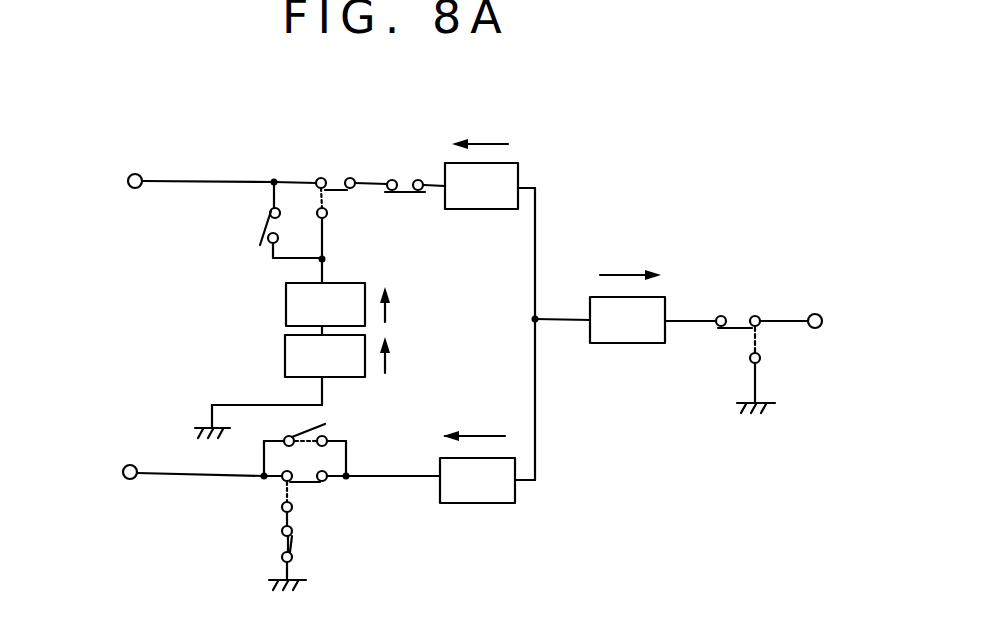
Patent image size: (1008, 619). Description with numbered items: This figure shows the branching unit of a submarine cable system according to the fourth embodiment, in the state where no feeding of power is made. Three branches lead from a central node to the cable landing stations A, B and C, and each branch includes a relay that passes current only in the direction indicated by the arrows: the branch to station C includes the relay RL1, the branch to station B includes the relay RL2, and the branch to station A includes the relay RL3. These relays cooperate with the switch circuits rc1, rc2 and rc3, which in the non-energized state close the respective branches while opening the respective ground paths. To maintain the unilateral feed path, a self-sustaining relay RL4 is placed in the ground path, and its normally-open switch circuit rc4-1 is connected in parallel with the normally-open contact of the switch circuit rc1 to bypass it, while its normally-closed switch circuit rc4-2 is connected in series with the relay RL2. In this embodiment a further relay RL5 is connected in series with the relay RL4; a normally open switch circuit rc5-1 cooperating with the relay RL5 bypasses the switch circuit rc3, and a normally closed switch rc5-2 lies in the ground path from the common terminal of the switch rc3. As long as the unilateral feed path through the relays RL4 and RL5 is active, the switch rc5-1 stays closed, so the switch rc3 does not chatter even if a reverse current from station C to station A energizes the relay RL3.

The cable landing station A is at (830, 322).
The cable landing station B is at (119, 182).
The cable landing station C is at (116, 473).
The relay RL1 is at (477, 480).
The relay RL2 is at (481, 186).
The relay RL3 is at (627, 320).
The self-sustaining relay RL4 is at (325, 304).
The relay RL5 is at (325, 356).
The switch circuit rc1 is at (345, 218).
The switch circuit rc2 is at (762, 364).
The switch circuit rc3 is at (312, 492).
The normally-open switch circuit rc4-1 is at (255, 220).
The normally-closed switch circuit rc4-2 is at (412, 209).
The normally open switch circuit rc5-1 is at (346, 427).
The normally closed switch rc5-2 is at (320, 551).